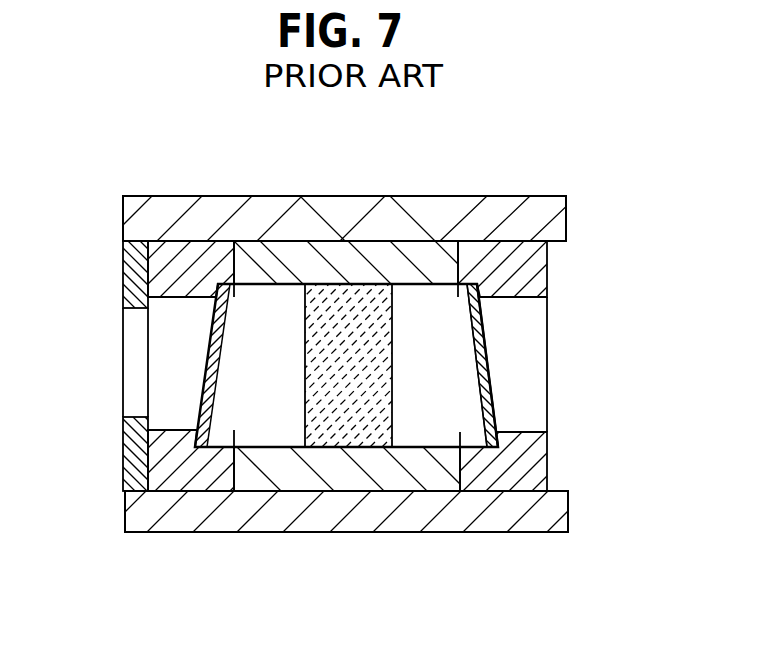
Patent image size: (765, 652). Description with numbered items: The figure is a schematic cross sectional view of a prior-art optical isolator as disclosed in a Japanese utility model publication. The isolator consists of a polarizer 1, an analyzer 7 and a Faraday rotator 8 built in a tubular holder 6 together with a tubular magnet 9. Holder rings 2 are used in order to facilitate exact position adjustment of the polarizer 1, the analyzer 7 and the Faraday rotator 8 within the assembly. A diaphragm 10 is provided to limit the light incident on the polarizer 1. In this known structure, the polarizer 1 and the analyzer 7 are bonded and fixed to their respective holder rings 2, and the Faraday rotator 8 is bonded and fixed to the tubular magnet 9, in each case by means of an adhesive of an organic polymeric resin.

The polarizer 1 is at (215, 393).
The holder ring 2 is at (158, 263).
The tubular holder 6 is at (396, 212).
The analyzer 7 is at (482, 388).
The Faraday rotator 8 is at (382, 349).
The tubular magnet 9 is at (428, 480).
The diaphragm 10 is at (130, 452).